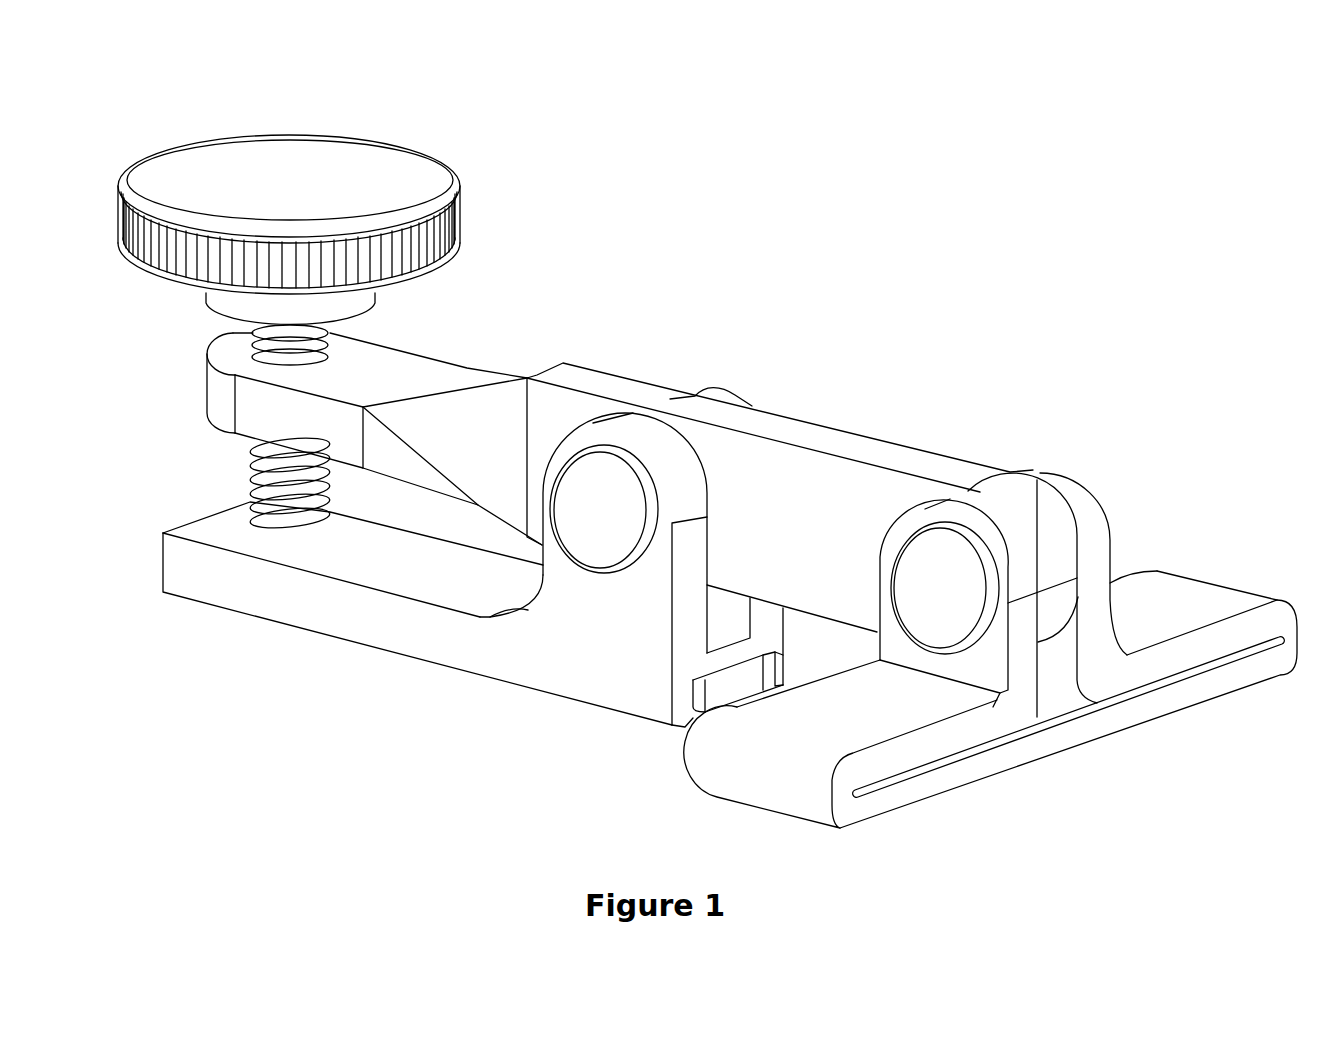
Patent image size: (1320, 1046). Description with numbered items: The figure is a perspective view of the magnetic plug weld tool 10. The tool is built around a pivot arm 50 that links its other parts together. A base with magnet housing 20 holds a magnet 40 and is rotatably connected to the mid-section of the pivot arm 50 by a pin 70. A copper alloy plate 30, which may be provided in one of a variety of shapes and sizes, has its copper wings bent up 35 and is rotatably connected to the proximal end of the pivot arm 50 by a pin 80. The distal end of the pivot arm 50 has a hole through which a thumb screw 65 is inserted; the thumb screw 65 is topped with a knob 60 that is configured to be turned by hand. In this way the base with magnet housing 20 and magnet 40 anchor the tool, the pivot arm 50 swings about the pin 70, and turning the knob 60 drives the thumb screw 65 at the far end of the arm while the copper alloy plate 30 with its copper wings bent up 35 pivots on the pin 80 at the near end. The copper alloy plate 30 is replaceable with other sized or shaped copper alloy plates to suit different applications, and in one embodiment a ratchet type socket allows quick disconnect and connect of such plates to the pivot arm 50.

The magnetic plug weld tool 10 is at (795, 336).
The base with magnet housing 20 is at (274, 602).
The copper alloy plate 30 is at (1099, 730).
The copper wings bent up 35 is at (1022, 646).
The magnet 40 is at (735, 699).
The pivot arm 50 is at (639, 393).
The knob 60 is at (290, 173).
The thumb screw 65 is at (240, 491).
The pin 70 is at (604, 517).
The pin 80 is at (946, 597).